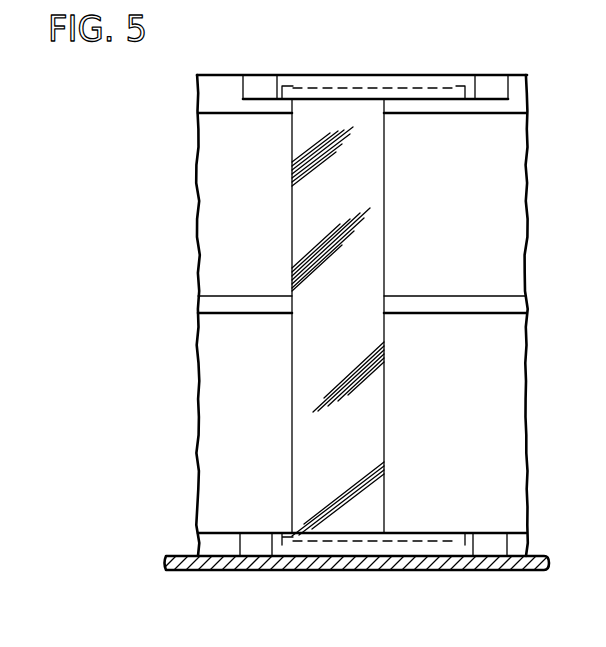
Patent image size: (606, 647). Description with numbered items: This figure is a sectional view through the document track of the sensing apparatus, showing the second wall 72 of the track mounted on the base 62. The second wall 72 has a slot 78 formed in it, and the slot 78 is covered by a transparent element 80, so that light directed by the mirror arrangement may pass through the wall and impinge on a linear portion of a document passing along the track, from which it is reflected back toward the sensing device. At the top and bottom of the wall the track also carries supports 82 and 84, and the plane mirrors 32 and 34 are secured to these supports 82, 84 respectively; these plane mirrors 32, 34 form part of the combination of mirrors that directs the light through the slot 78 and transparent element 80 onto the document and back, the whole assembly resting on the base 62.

The plane mirror 32 is at (345, 86).
The plane mirror 34 is at (412, 545).
The base 62 is at (197, 562).
The second wall 72 is at (513, 257).
The slot 78 is at (384, 205).
The transparent element 80 is at (292, 200).
The support 82 is at (447, 75).
The support 84 is at (343, 560).